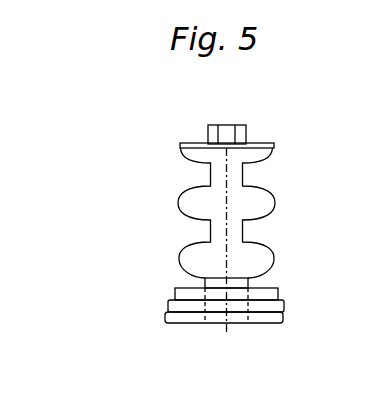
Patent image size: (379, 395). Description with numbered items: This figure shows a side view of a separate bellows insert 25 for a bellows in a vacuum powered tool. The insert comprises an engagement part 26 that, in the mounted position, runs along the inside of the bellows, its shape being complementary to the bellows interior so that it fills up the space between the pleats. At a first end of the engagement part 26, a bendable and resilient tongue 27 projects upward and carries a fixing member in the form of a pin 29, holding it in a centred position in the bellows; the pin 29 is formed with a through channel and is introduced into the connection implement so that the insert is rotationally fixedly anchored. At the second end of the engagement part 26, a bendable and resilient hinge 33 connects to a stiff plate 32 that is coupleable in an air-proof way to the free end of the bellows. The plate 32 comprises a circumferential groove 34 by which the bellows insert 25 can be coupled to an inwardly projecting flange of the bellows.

The bellows insert 25 is at (130, 129).
The engagement part 26 is at (196, 202).
The tongue 27 is at (242, 158).
The pin 29 is at (233, 123).
The plate 32 is at (175, 290).
The hinge 33 is at (248, 280).
The circumferential groove 34 is at (166, 313).